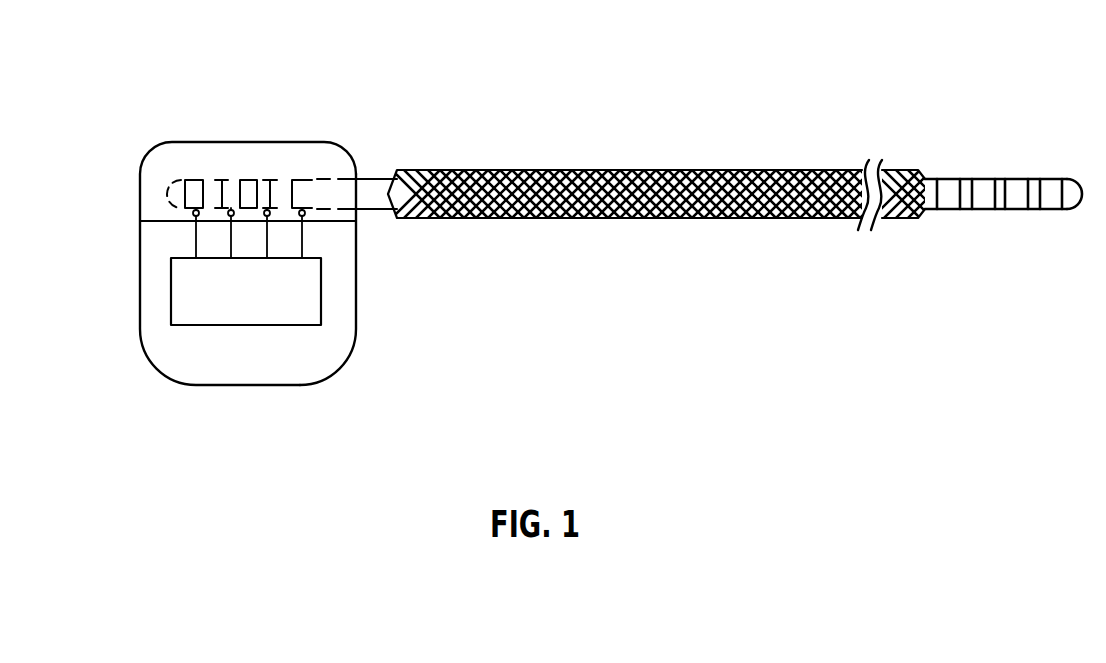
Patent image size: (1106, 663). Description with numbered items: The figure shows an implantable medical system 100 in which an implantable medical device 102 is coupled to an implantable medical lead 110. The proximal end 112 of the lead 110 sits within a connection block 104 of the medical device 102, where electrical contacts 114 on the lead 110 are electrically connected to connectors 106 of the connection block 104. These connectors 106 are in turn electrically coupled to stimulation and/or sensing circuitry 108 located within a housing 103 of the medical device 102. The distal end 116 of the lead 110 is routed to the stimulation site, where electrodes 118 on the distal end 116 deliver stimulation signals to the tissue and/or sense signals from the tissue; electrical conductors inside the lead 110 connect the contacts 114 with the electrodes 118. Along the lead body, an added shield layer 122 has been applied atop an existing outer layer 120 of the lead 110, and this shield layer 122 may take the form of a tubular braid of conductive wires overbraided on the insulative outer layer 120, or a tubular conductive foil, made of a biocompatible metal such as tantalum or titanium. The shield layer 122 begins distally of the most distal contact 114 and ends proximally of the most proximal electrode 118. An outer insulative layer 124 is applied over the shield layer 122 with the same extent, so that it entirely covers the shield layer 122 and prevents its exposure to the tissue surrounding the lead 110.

The implantable medical system 100 is at (531, 82).
The implantable medical device 102 is at (240, 387).
The housing 103 is at (348, 352).
The connection block 104 is at (150, 178).
The connectors 106 is at (193, 213).
The stimulation and/or sensing circuitry 108 is at (170, 312).
The implantable medical lead 110 is at (372, 157).
The proximal end 112 is at (178, 178).
The electrical contacts 114 is at (300, 185).
The distal end 116 is at (1072, 177).
The electrodes 118 is at (948, 185).
The outer layer 120 is at (380, 179).
The shield layer 122 is at (385, 209).
The outer insulative layer 124 is at (455, 220).